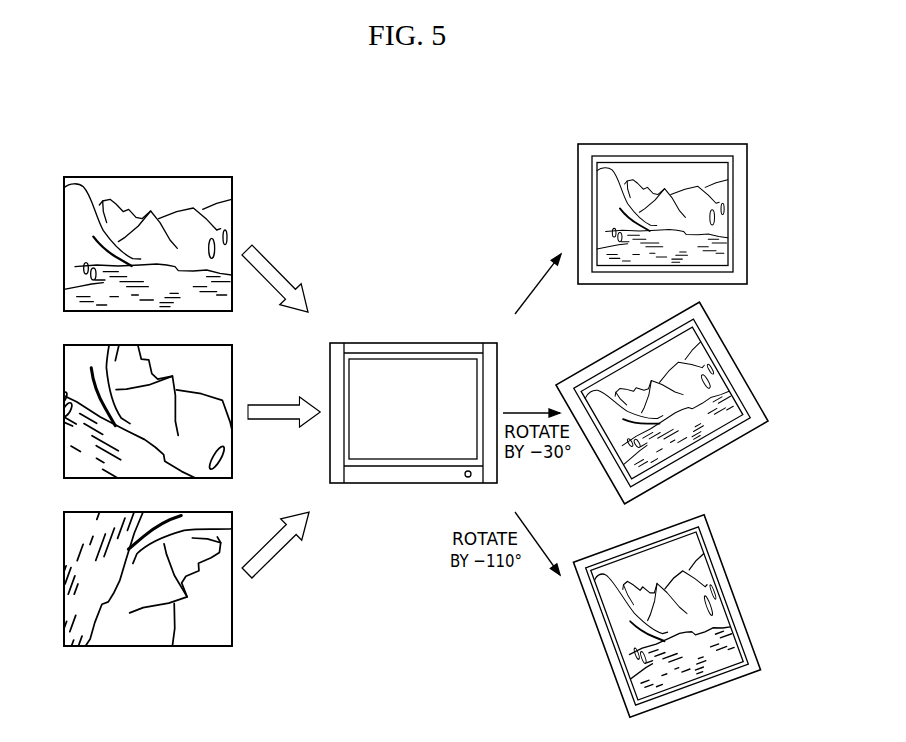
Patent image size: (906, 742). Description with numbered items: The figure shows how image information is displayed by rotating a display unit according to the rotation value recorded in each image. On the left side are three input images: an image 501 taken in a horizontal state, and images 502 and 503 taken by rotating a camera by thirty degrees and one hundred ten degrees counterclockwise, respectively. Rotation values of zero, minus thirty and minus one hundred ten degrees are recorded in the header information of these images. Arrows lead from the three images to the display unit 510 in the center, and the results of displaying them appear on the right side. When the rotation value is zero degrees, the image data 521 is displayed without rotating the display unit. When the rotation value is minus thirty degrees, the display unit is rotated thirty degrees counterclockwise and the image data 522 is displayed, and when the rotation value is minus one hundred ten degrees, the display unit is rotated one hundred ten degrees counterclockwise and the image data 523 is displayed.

The image taken in a horizontal state 501 is at (175, 176).
The image taken by rotating a camera by 30° counterclockwise 502 is at (176, 344).
The image taken by rotating a camera by 110° counterclockwise 503 is at (177, 512).
The display unit 510 is at (446, 343).
The image data 521 is at (693, 144).
The image data 522 is at (635, 337).
The image data 523 is at (617, 545).